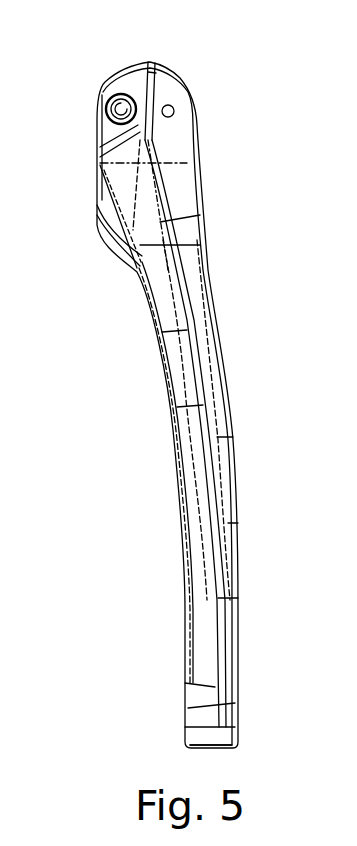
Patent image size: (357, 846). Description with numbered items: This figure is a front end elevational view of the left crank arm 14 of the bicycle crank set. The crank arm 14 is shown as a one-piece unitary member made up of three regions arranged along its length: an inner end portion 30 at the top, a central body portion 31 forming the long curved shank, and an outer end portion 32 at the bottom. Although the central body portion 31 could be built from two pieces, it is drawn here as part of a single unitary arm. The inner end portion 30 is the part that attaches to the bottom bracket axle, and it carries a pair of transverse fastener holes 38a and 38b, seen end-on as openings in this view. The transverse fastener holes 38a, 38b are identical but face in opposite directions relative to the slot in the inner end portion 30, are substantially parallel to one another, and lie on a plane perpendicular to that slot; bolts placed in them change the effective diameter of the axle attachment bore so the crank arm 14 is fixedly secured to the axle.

The crank arm 14 is at (242, 97).
The inner end portion 30 is at (157, 63).
The central body portion 31 is at (203, 367).
The outer end portion 32 is at (208, 717).
The transverse fastener hole 38a is at (174, 111).
The transverse fastener hole 38b is at (118, 111).